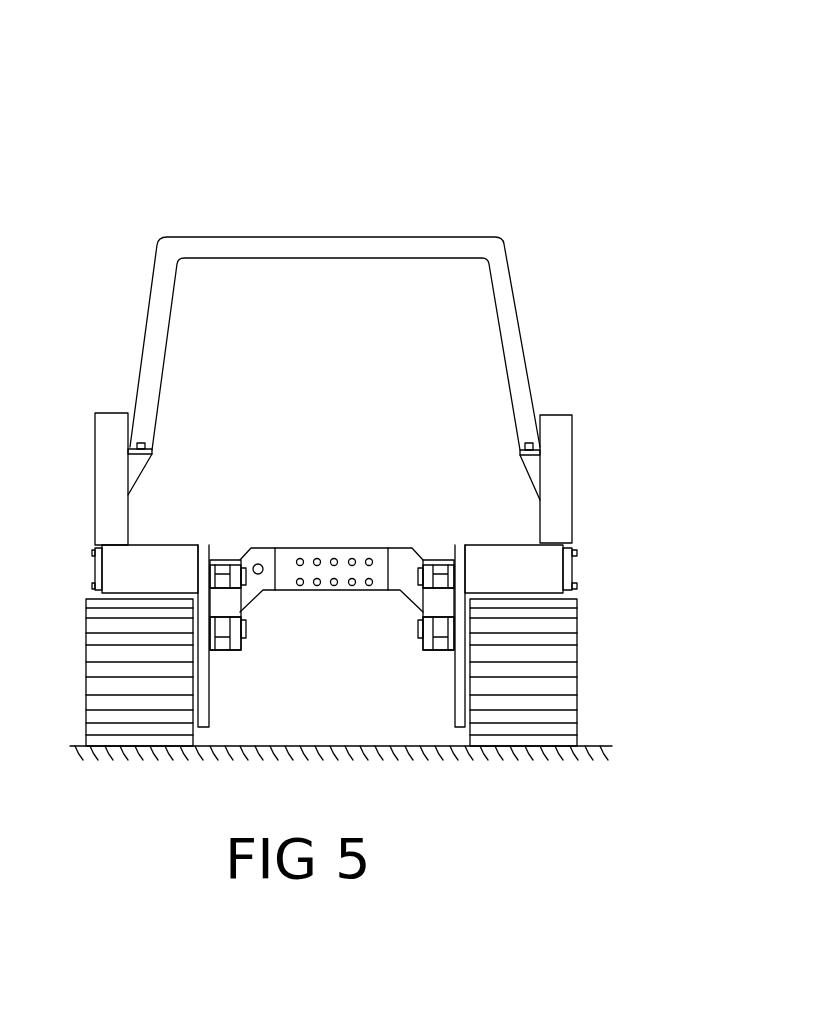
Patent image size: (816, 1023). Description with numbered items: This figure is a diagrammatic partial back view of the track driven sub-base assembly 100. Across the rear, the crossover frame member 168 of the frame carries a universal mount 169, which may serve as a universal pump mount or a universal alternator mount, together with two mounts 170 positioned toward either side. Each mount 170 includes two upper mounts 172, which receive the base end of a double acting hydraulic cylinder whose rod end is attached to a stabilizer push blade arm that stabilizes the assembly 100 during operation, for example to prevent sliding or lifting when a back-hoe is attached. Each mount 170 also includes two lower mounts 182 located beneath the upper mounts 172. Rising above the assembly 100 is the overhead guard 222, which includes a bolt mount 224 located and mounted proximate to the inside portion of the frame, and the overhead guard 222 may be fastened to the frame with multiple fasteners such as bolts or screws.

The assembly 100 is at (374, 62).
The overhead guard 222 is at (347, 237).
The bolt mount 224 is at (150, 462).
The universal mount 169 is at (296, 548).
The crossover frame member 168 is at (413, 550).
The mount 170 is at (243, 600).
The upper mount 172 is at (225, 565).
The lower mount 182 is at (225, 637).